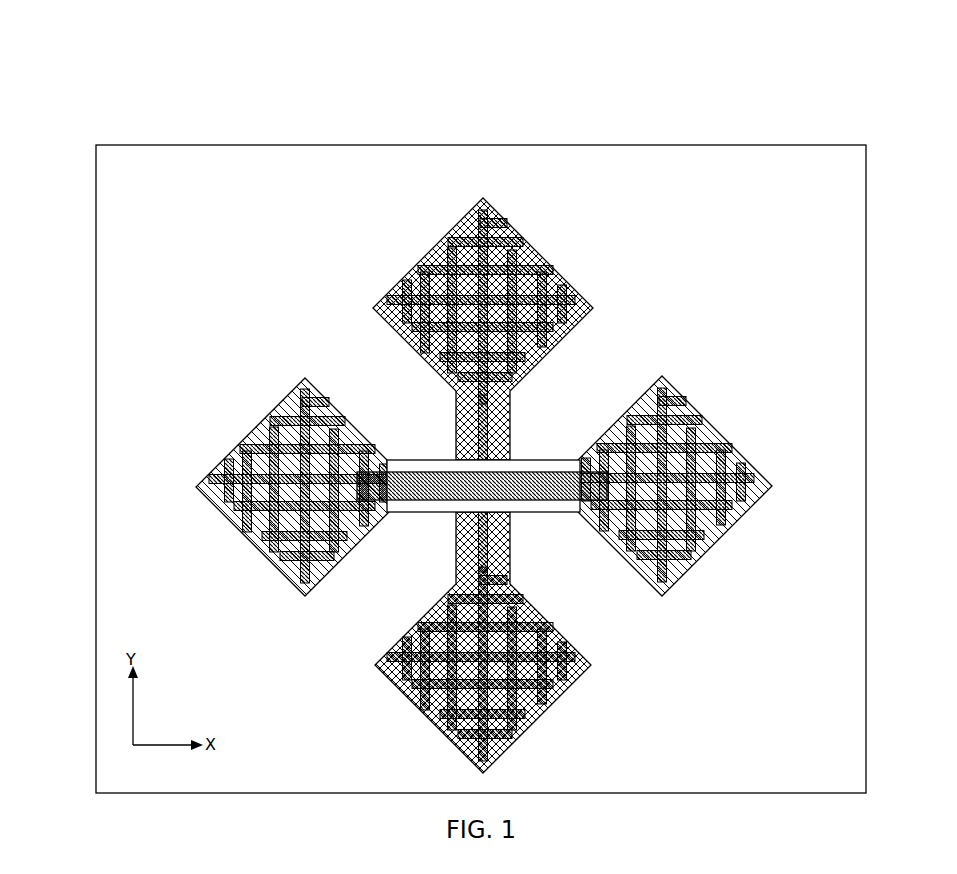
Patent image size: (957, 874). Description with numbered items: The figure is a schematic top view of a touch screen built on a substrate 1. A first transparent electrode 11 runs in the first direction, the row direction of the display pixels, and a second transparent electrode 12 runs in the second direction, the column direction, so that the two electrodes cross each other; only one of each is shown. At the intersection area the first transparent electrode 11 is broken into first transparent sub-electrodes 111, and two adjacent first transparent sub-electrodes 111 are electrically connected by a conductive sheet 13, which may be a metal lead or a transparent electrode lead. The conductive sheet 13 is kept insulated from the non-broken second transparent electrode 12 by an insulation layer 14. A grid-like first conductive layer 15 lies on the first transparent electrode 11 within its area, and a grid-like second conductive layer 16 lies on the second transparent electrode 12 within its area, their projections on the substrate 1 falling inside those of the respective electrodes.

The substrate 1 is at (283, 145).
The first transparent electrode 11 is at (578, 588).
The first transparent sub-electrode 111 is at (733, 472).
The second transparent electrode 12 is at (583, 302).
The conductive sheet 13 is at (548, 473).
The insulation layer 14 is at (435, 462).
The first conductive layer 15 is at (312, 387).
The second conductive layer 16 is at (532, 262).